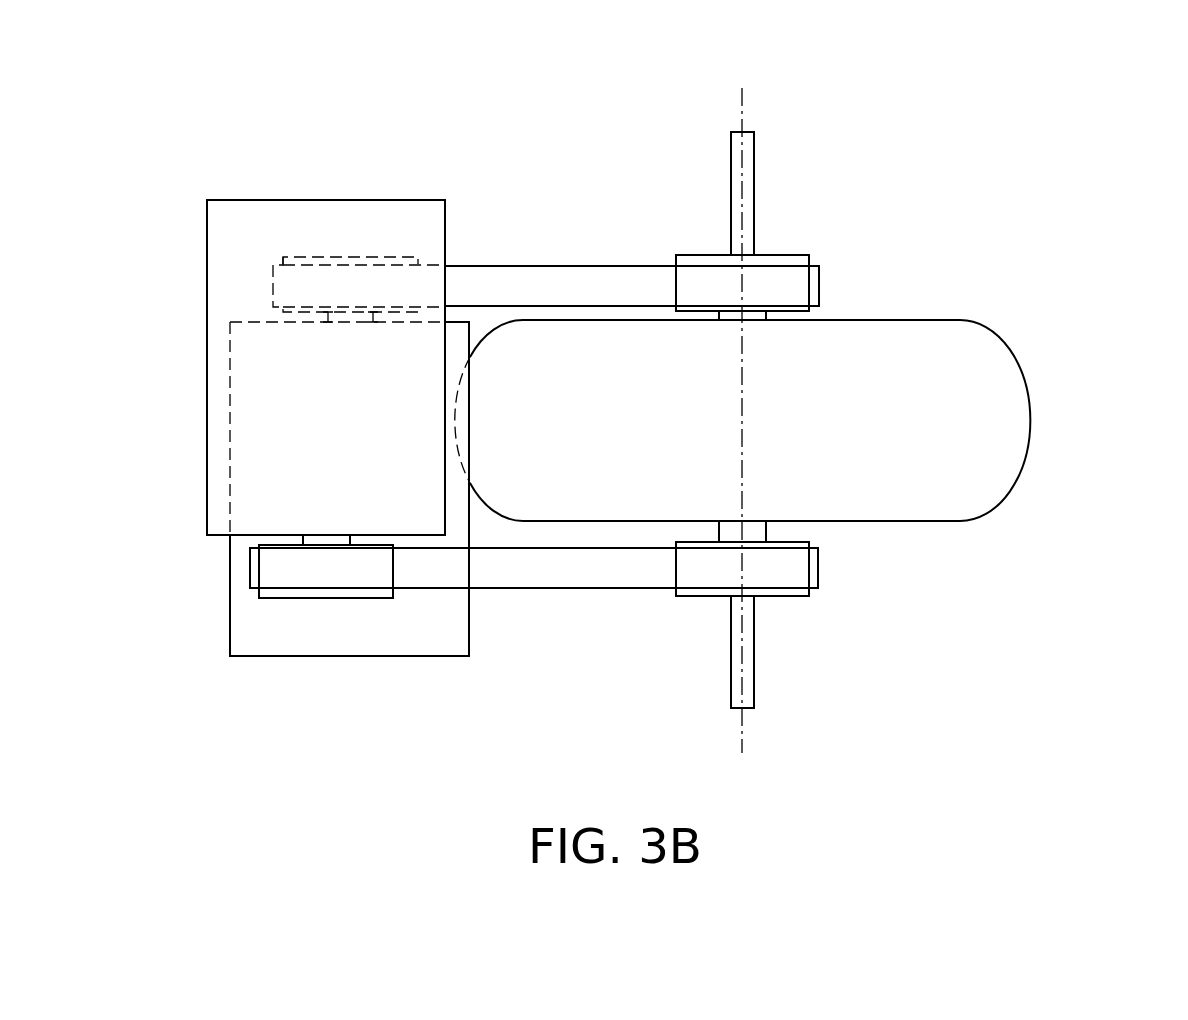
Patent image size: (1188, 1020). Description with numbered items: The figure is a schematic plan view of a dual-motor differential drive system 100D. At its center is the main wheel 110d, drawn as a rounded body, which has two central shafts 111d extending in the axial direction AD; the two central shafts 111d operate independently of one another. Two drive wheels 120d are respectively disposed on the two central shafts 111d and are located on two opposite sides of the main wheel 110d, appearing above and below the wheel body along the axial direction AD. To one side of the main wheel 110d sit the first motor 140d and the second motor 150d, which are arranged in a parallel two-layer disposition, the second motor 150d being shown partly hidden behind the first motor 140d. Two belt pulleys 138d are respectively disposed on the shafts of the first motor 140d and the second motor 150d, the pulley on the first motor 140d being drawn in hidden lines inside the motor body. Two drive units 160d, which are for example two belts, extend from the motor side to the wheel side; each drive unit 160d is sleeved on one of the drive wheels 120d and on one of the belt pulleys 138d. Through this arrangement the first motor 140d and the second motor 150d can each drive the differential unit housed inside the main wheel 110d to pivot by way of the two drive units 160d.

The dual-motor differential drive system 100D is at (1185, 777).
The main wheel 110d is at (1010, 412).
The central shaft 111d is at (750, 663).
The drive wheel 120d is at (797, 260).
The belt pulley 138d is at (403, 260).
The first motor 140d is at (230, 255).
The second motor 150d is at (297, 642).
The drive unit 160d is at (593, 578).
The axial direction AD is at (742, 405).